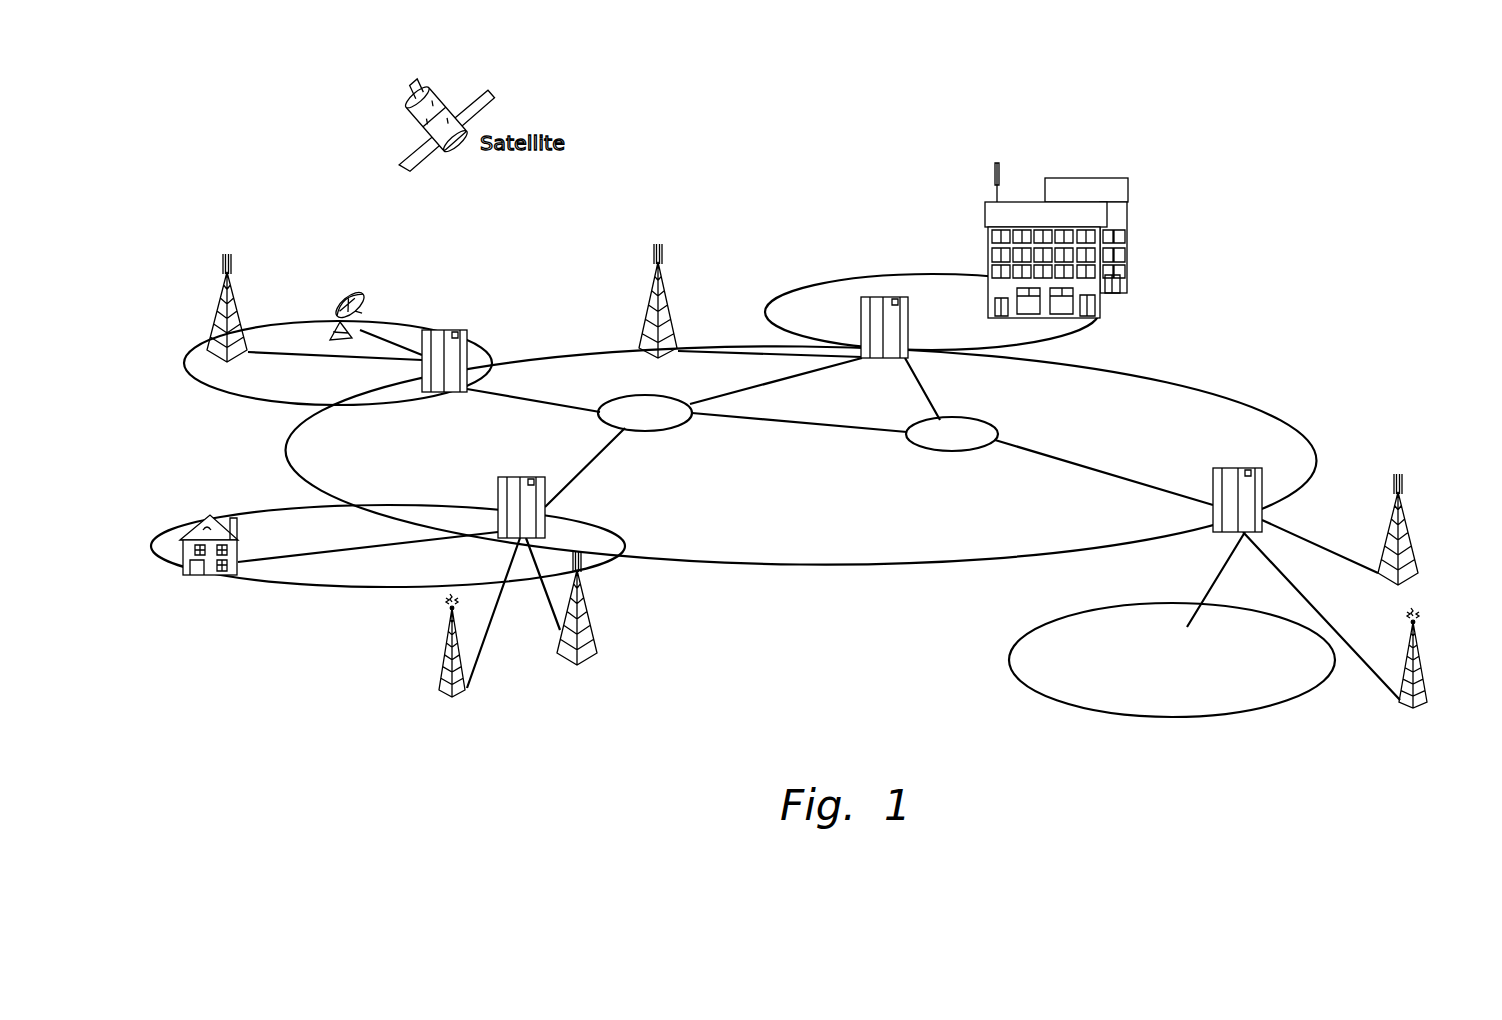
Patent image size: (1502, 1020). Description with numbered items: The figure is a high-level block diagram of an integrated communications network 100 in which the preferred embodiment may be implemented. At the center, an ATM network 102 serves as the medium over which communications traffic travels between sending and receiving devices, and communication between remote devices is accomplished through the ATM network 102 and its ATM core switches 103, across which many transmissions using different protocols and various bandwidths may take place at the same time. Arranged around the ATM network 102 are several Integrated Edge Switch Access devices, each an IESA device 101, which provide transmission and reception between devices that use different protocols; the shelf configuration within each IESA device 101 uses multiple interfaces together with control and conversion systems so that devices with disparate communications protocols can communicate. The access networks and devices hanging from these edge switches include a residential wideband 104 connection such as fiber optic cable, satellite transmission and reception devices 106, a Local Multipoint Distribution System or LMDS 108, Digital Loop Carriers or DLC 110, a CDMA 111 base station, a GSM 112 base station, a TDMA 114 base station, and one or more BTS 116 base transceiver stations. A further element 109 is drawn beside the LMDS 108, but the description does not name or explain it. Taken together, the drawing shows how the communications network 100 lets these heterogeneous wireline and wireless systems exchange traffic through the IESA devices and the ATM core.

The communications network 100 is at (836, 642).
The Integrated Edge Switch Access (IESA) device 101 is at (454, 330).
The ATM network 102 is at (1162, 373).
The ATM core switches 103 is at (672, 432).
The residential wideband 104 is at (325, 585).
The satellite transmission and reception devices 106 is at (226, 400).
The Local Multipoint Distribution System (LMDS) 108 is at (863, 275).
The LMDS building 109 is at (1108, 178).
The Digital Loop Carriers (DLC) 110 is at (1290, 705).
The CDMA 111 is at (1384, 543).
The GSM 112 is at (595, 665).
The TDMA 114 is at (644, 330).
The BTS 116 is at (446, 653).